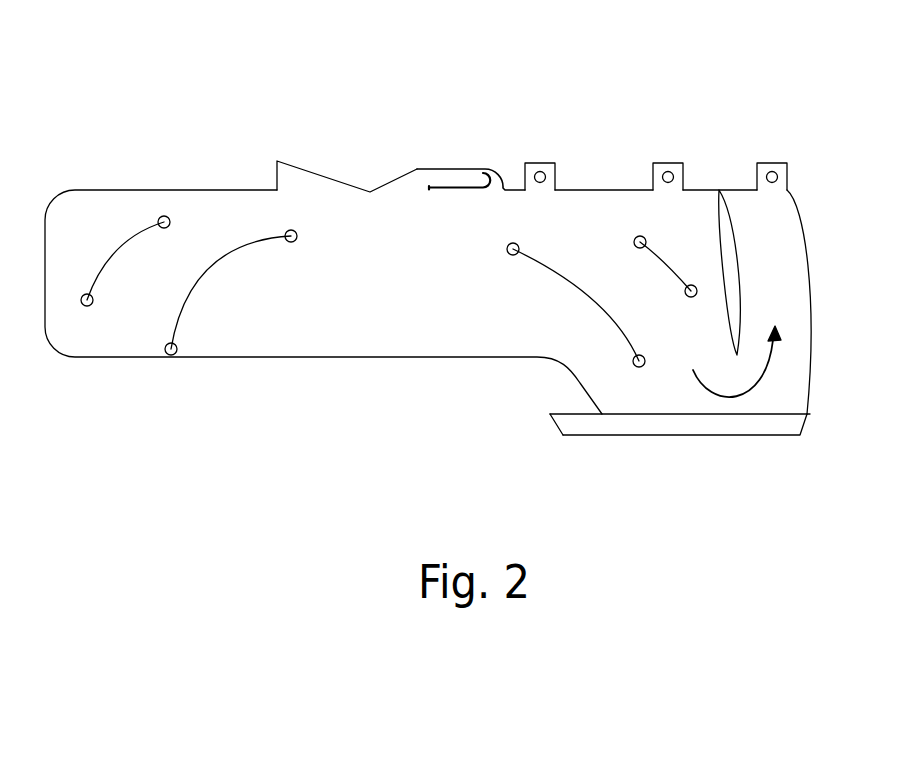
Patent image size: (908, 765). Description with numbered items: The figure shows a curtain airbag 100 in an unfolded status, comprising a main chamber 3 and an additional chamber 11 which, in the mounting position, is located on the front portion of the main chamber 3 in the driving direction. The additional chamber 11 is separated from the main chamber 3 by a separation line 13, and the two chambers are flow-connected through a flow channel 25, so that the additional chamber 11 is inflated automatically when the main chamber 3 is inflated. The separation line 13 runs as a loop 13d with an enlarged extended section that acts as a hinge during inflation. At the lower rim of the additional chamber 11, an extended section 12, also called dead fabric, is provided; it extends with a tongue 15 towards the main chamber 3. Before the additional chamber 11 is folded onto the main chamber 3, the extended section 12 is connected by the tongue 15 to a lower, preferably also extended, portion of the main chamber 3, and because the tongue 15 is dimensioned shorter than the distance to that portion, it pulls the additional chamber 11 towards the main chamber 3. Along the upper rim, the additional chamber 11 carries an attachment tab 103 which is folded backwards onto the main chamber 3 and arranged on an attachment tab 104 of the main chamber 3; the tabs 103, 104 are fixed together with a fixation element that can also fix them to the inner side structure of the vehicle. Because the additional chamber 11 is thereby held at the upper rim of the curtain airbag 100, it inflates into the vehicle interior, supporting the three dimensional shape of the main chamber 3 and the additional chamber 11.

The curtain airbag 100 is at (476, 293).
The main chamber 3 is at (507, 197).
The attachment tab 104 is at (668, 163).
The attachment tab 103 is at (780, 165).
The loop 13d is at (717, 236).
The separation line 13 is at (787, 223).
The additional chamber 11 is at (793, 298).
The tongue 15 is at (568, 427).
The extended section 12 is at (655, 477).
The flow channel 25 is at (730, 400).